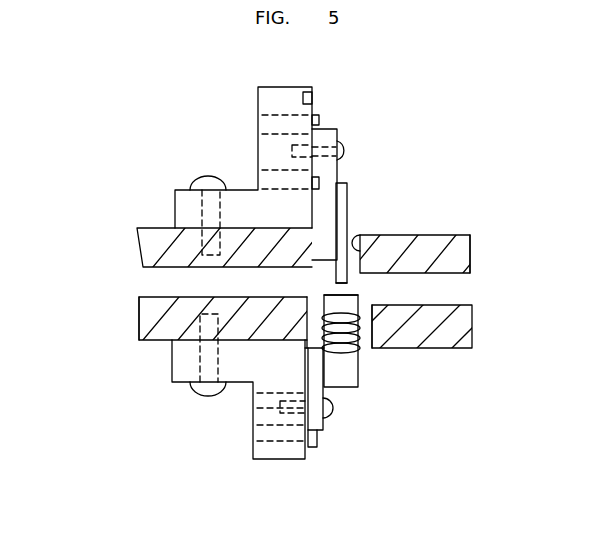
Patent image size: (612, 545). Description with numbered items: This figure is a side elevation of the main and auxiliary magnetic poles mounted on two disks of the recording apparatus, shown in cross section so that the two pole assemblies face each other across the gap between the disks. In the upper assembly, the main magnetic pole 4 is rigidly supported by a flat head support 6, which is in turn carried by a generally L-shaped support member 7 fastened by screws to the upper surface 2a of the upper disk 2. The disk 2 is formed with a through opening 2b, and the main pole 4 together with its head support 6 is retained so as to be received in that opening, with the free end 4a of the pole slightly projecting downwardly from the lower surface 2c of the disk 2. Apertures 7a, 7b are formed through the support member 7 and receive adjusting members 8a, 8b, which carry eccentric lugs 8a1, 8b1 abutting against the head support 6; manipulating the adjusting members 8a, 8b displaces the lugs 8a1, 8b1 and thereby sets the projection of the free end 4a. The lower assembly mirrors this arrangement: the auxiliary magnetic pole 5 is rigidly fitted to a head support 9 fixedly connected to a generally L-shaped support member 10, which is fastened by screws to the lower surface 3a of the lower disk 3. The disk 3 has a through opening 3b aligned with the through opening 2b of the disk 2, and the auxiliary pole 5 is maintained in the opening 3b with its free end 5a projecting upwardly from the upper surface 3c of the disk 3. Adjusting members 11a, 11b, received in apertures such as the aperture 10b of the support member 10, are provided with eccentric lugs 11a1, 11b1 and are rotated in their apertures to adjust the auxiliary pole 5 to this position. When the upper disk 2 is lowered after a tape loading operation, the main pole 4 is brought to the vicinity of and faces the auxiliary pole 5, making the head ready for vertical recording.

The upper disk 2 is at (164, 244).
The upper surface of the upper disk 2a is at (420, 234).
The through opening 2b is at (358, 238).
The lower surface of the disk 2c is at (466, 268).
The disk 3 is at (150, 340).
The lower surface of the disk 3a is at (440, 350).
The through opening 3b is at (368, 335).
The upper surface of the disk 3c is at (192, 290).
The main magnetic pole 4 is at (350, 205).
The free end of the magnetic pole 4a is at (350, 286).
The auxiliary magnetic pole 5 is at (360, 384).
The free end of the auxiliary magnetic pole 5a is at (322, 296).
The head support 6 is at (326, 138).
The support member 7 is at (256, 99).
The aperture 7a is at (270, 168).
The aperture 7b is at (268, 128).
The adjusting member 8a is at (270, 194).
The eccentric lug 8a1 is at (320, 182).
The adjusting member 8b is at (292, 102).
The eccentric lug 8b1 is at (319, 118).
The head support 9 is at (318, 440).
The support member 10 is at (256, 453).
The aperture 10b is at (266, 428).
The adjusting member 11a is at (282, 392).
The eccentric lug 11a1 is at (334, 415).
The adjusting member 11b is at (270, 454).
The eccentric lug 11b1 is at (313, 448).